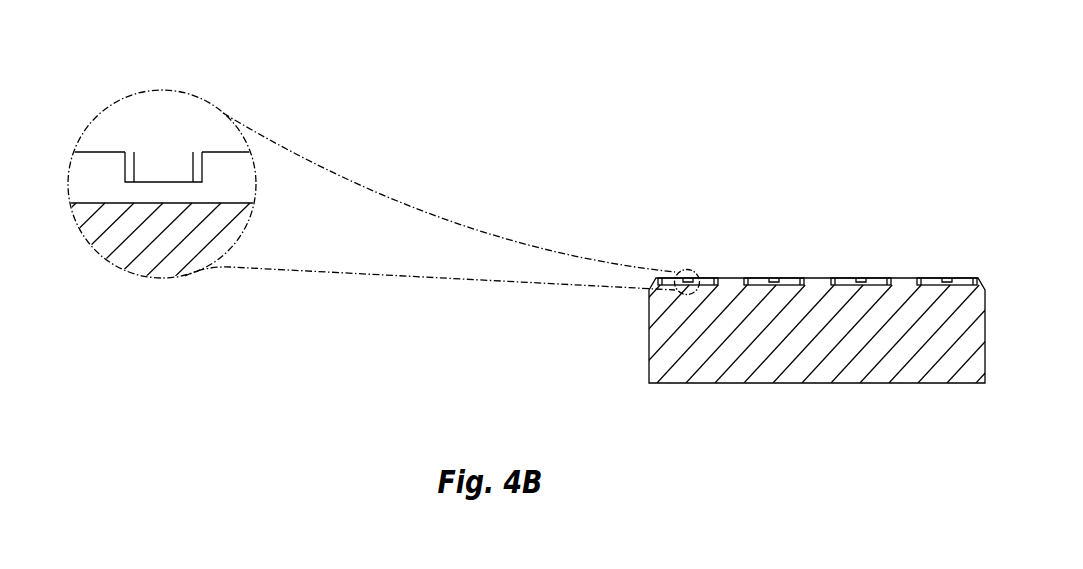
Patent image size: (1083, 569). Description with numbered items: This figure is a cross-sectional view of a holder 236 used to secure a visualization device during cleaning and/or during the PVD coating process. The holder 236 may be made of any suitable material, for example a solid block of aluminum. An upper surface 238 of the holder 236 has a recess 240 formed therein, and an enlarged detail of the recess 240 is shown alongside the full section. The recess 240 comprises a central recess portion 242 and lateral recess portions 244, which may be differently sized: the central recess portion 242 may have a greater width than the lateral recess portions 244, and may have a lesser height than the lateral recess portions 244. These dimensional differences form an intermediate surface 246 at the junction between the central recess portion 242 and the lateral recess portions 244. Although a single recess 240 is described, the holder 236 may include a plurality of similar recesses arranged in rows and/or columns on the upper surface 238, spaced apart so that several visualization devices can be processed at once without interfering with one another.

The holder 236 is at (813, 242).
The upper surface 238 is at (900, 280).
The recess 240 is at (115, 130).
The central recess portion 242 is at (180, 160).
The lateral recess portions 244 is at (237, 167).
The intermediate surface 246 is at (148, 178).